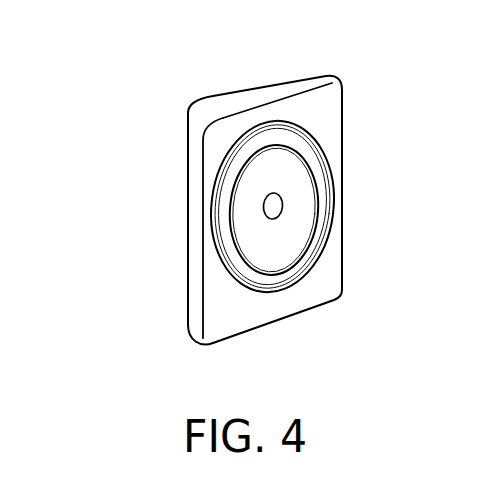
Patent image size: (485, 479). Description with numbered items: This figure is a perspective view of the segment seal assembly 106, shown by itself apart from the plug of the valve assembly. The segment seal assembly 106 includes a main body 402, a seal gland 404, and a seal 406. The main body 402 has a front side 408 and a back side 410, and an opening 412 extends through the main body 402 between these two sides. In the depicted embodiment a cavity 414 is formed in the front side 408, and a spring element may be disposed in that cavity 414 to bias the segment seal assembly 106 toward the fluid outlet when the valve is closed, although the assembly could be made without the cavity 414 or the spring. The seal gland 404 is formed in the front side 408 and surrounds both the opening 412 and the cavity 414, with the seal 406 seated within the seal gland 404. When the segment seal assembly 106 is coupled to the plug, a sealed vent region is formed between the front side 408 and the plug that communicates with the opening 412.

The segment seal assembly 106 is at (155, 93).
The main body 402 is at (307, 78).
The seal gland 404 is at (327, 233).
The seal 406 is at (327, 170).
The front side 408 is at (317, 282).
The back side 410 is at (188, 227).
The opening 412 is at (277, 212).
The cavity 414 is at (277, 153).